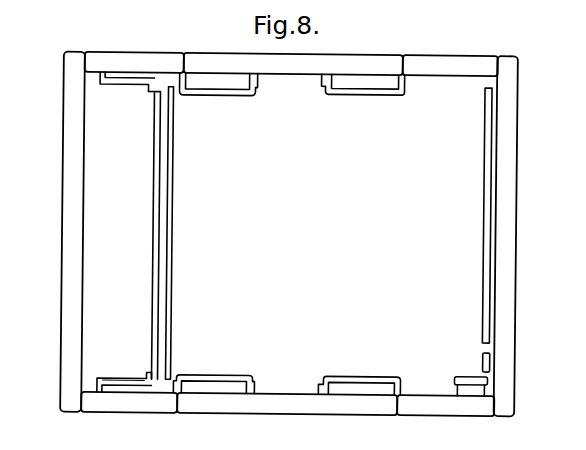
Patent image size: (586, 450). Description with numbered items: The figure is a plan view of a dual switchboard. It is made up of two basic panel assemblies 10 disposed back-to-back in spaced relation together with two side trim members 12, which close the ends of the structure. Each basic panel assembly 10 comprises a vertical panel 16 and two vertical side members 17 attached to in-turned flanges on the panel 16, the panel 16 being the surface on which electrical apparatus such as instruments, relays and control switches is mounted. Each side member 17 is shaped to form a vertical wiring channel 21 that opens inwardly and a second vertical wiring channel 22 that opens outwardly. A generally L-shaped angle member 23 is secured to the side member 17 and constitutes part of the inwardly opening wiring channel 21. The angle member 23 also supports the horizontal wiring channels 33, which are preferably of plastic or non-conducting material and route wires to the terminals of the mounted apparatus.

The basic panel assembly 10 is at (127, 203).
The end trim member 12 is at (208, 63).
The vertical panel 16 is at (72, 184).
The vertical side member 17 is at (135, 64).
The vertical wiring channel 21 is at (134, 74).
The second vertical wiring channel 22 is at (214, 81).
The L-shaped angle member 23 is at (124, 381).
The horizontal wiring channel 33 is at (163, 266).